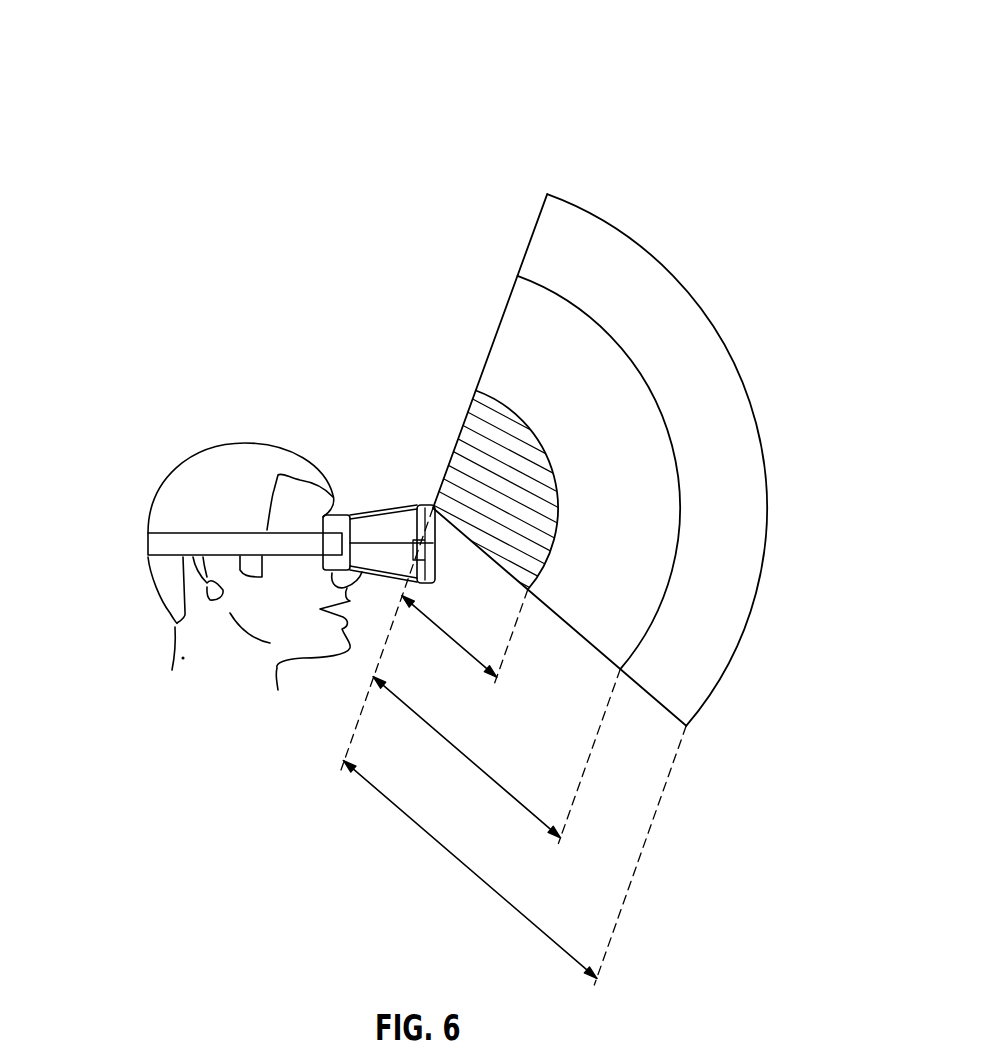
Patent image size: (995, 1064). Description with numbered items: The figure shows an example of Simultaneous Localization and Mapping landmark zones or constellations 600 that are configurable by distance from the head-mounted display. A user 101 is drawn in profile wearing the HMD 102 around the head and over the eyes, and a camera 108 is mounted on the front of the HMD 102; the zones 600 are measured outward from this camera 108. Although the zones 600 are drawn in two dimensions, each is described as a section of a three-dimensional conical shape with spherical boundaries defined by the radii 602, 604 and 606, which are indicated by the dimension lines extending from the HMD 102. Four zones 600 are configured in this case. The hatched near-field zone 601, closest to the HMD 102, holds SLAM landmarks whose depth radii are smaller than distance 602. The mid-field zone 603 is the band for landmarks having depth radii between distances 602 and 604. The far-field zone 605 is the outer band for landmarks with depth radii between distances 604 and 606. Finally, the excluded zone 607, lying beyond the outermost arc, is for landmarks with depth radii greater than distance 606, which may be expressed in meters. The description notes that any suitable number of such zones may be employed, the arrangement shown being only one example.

The SLAM landmark zones 600 is at (74, 35).
The user 101 is at (215, 566).
The HMD 102 is at (290, 511).
The camera 108 is at (393, 481).
The near-field zone 601 is at (495, 490).
The distance 602 is at (434, 639).
The mid-field zone 603 is at (576, 454).
The distance 604 is at (496, 756).
The far-field zone 605 is at (646, 433).
The distance 606 is at (515, 855).
The excluded zone 607 is at (610, 441).